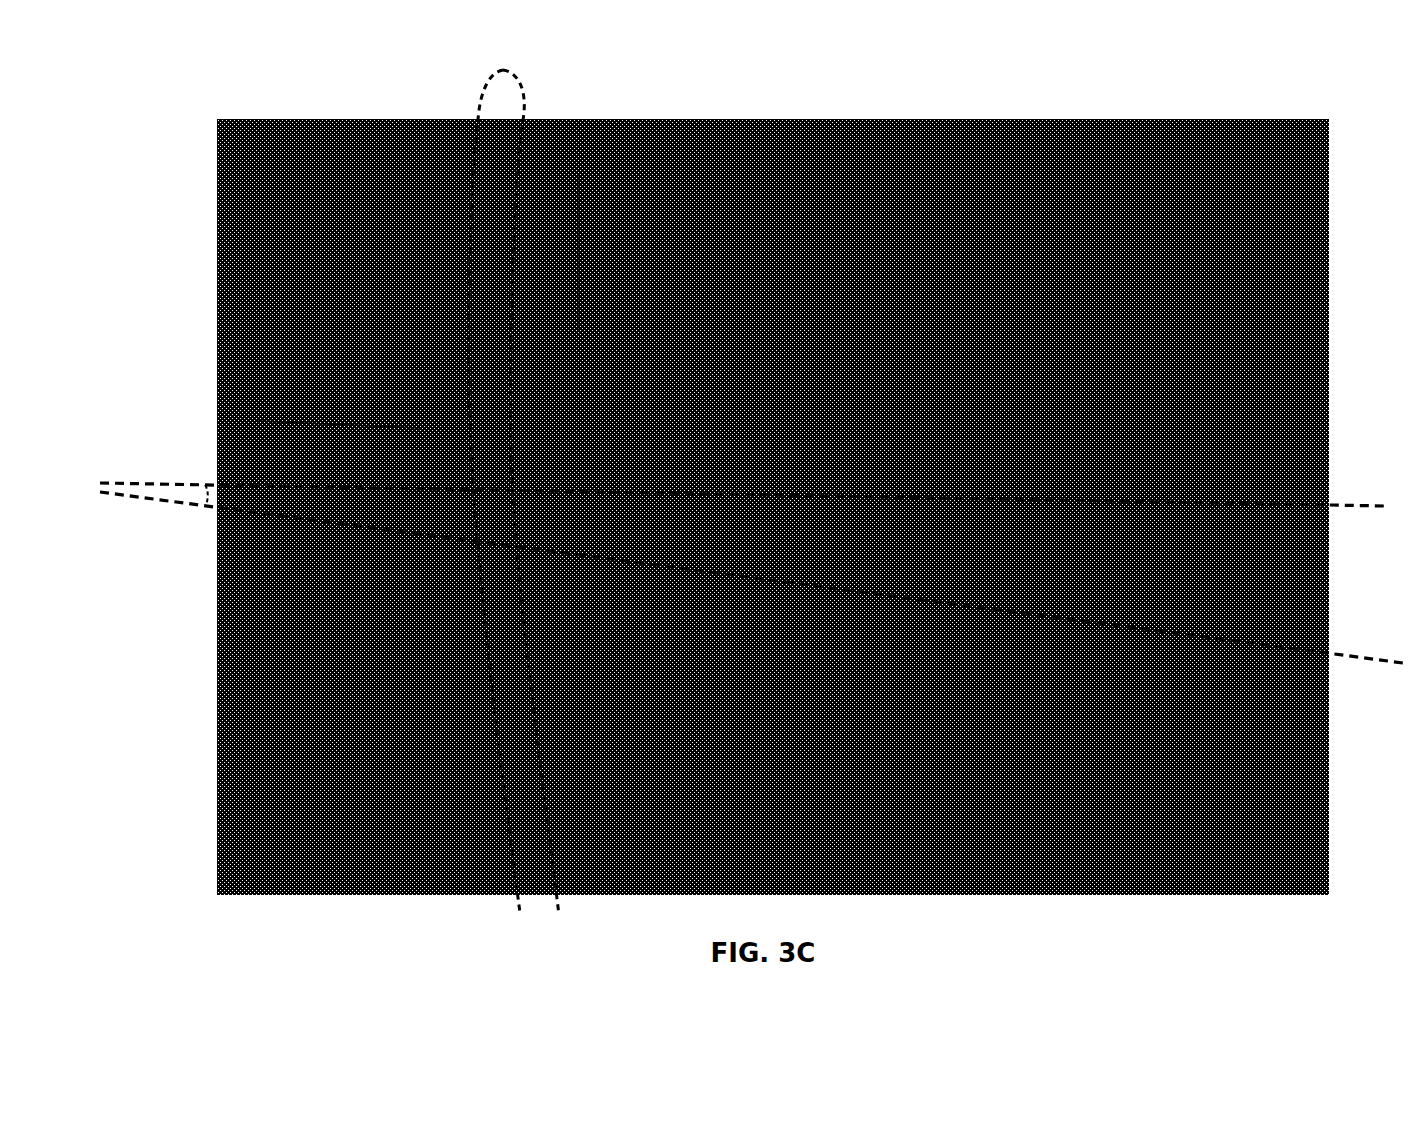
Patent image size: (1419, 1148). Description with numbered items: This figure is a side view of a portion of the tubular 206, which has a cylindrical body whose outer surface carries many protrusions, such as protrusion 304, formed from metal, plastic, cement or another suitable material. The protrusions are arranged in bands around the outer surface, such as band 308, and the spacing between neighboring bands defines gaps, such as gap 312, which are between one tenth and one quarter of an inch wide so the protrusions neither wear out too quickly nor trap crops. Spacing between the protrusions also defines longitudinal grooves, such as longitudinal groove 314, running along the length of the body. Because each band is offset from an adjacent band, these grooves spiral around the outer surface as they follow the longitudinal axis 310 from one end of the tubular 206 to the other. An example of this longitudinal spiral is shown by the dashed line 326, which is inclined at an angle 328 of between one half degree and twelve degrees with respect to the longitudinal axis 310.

The tubular 206 is at (751, 476).
The protrusion 304 is at (245, 344).
The band 308 is at (514, 477).
The longitudinal axis 310 is at (110, 484).
The gap 312 is at (578, 175).
The longitudinal groove 314 is at (258, 421).
The dashed line 326 is at (1378, 662).
The angle 328 is at (192, 490).